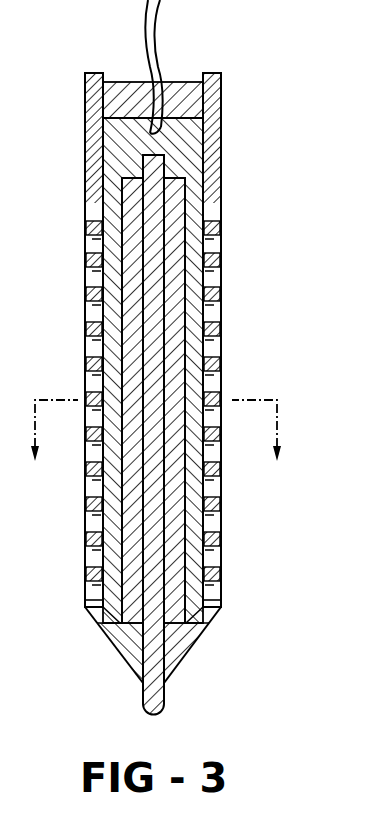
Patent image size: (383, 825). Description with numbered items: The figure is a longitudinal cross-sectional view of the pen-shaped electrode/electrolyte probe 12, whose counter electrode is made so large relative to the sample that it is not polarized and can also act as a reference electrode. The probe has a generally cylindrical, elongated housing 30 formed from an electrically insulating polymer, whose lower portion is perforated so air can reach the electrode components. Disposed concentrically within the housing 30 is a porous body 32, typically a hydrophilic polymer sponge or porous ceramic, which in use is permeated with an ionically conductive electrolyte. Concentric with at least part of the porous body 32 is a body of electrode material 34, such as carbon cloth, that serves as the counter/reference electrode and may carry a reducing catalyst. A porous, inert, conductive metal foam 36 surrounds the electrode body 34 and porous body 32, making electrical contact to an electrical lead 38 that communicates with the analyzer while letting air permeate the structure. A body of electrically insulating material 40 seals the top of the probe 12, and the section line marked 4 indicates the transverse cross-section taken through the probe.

The probe 12 is at (263, 128).
The housing 30 is at (221, 178).
The porous body 32 is at (165, 703).
The body of electrode material 34 is at (86, 520).
The metal foam 36 is at (86, 260).
The electrical lead 38 is at (146, 60).
The body of electrically insulating material 40 is at (173, 97).
The section line 4- 4 is at (156, 414).